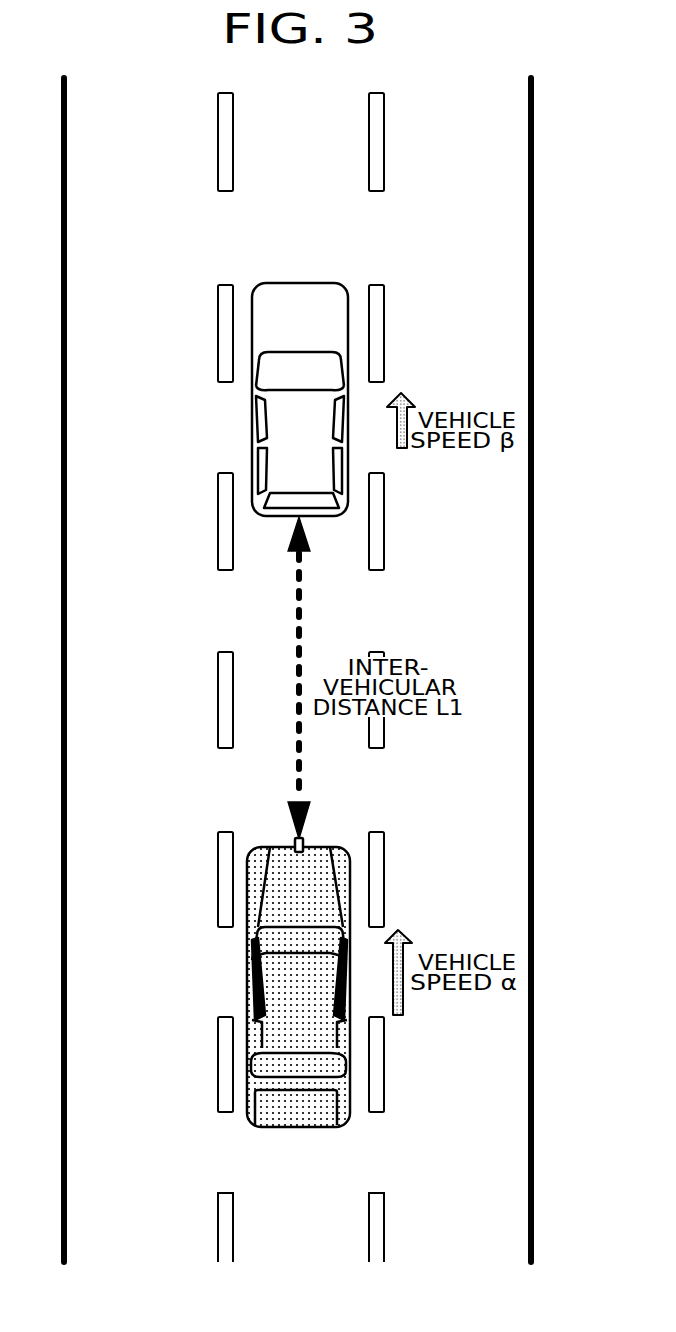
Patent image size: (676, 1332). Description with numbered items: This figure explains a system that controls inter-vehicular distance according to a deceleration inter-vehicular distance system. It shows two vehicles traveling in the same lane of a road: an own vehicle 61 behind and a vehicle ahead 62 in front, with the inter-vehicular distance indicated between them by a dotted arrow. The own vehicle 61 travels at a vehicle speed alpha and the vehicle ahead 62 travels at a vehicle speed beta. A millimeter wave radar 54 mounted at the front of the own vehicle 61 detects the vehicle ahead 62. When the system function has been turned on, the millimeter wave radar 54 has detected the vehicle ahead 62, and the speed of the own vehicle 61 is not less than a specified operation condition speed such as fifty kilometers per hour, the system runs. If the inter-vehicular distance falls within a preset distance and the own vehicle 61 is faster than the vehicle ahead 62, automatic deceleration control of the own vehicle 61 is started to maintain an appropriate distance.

The millimeter wave radar 54 is at (295, 843).
The own vehicle 61 is at (282, 972).
The vehicle ahead 62 is at (292, 425).